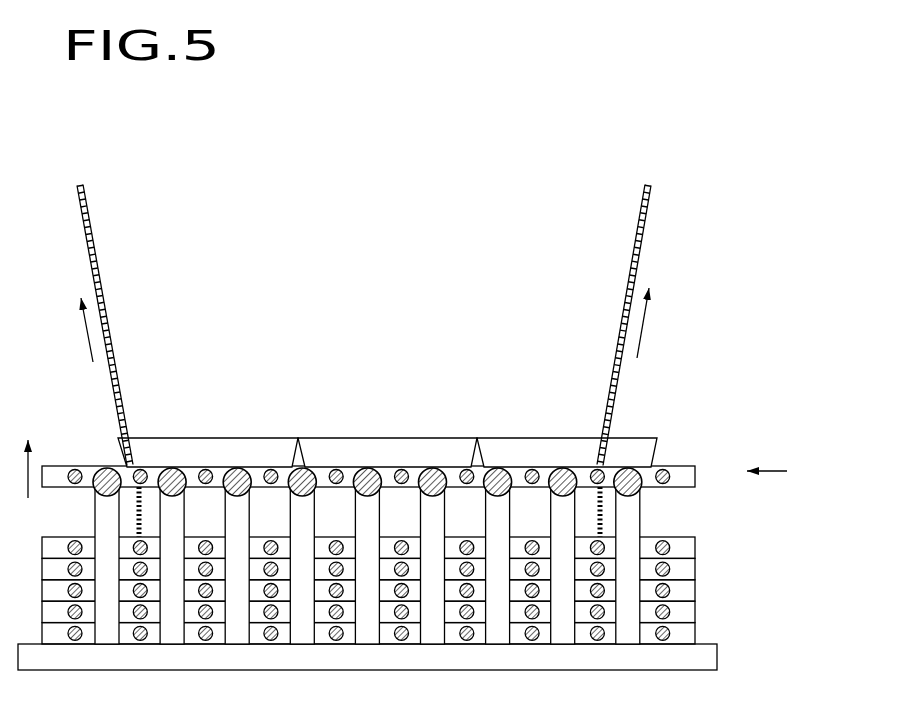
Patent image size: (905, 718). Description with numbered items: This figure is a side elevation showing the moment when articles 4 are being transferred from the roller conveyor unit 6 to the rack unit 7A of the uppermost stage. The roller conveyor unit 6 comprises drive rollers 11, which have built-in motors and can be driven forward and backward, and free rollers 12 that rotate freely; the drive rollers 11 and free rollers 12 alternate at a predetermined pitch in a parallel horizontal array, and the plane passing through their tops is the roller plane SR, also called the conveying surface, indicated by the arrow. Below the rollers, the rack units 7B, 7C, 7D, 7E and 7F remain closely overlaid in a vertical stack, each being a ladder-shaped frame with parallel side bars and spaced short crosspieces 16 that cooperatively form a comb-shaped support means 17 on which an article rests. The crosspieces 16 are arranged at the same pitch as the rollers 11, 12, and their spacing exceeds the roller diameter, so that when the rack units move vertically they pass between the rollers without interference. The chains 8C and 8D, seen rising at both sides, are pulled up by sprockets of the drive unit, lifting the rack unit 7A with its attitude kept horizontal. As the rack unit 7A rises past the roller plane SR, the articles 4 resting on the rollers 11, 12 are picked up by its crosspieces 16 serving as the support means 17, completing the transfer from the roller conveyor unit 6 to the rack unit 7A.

The article 4 is at (266, 448).
The roller conveyor unit 6 is at (386, 578).
The rack unit 7A is at (683, 482).
The rack unit 7B is at (689, 547).
The rack unit 7C is at (689, 570).
The rack unit 7D is at (689, 592).
The rack unit 7E is at (689, 616).
The rack unit 7F is at (689, 637).
The chain 8C is at (95, 233).
The chain 8D is at (645, 232).
The drive roller 11 is at (107, 468).
The free roller 12 is at (176, 468).
The crosspiece 16 is at (76, 468).
The support means 17 is at (65, 467).
The roller plane SR is at (785, 473).